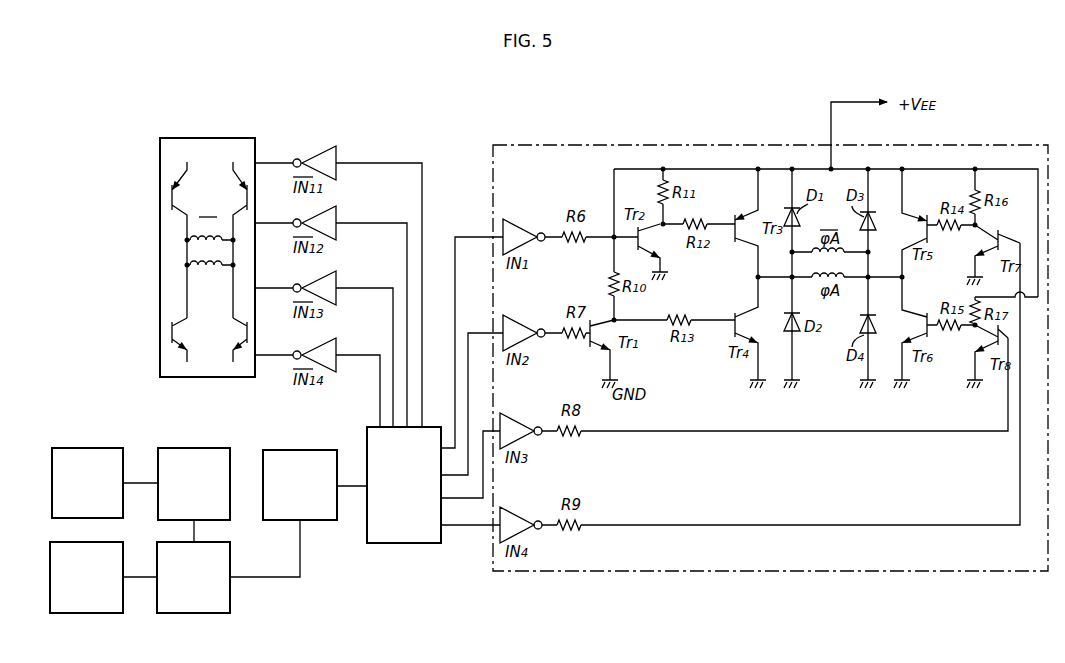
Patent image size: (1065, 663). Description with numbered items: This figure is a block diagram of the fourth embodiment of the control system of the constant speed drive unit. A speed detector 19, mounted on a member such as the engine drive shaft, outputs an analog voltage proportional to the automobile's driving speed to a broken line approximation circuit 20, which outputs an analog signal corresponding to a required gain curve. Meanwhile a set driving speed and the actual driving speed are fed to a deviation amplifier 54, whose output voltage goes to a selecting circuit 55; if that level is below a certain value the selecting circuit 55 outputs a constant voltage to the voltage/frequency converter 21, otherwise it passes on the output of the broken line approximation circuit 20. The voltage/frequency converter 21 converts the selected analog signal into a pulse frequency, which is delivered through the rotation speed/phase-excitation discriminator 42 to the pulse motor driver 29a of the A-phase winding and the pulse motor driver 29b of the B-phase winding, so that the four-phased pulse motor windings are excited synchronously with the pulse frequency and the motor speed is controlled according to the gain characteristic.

The speed detector 19 is at (93, 448).
The broken line approximation circuit 20 is at (198, 448).
The voltage/frequency converter 21 is at (303, 450).
The rotation speed/phase-excitation discriminator 42 is at (403, 543).
The deviation amplifier 54 is at (93, 613).
The selecting circuit 55 is at (199, 613).
The pulse motor driver of A-phase winding 29a is at (795, 571).
The pulse motor driver of B-phase winding 29b is at (218, 138).